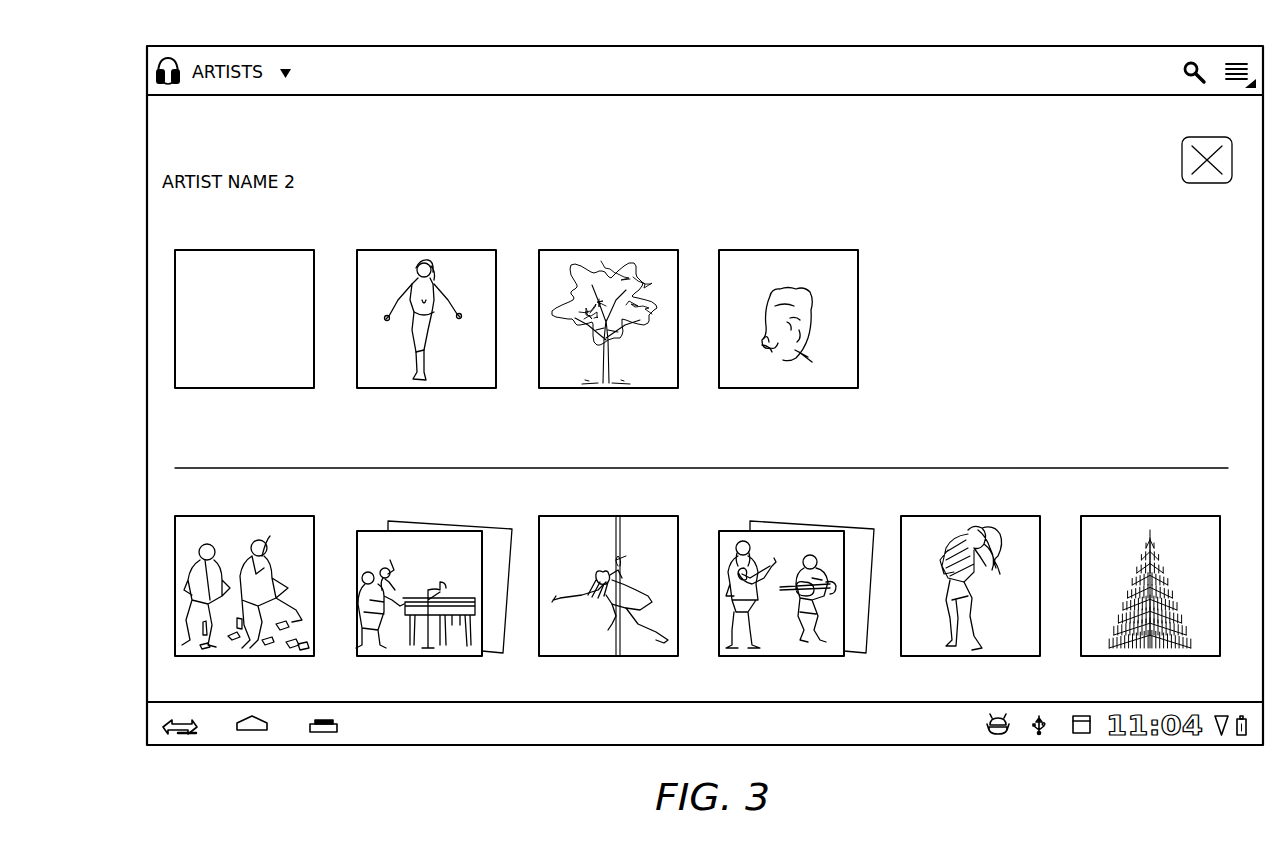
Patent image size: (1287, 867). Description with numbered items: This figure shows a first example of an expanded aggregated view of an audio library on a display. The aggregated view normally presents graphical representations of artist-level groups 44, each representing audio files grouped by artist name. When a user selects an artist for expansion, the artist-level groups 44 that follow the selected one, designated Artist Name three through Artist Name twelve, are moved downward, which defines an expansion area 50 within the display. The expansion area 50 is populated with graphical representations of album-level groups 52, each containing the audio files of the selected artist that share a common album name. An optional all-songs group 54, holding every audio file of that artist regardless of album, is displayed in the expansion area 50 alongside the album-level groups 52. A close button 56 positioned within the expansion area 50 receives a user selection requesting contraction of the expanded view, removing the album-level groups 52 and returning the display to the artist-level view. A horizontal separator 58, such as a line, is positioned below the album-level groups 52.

The artist-level groups 44 is at (297, 516).
The expansion area 50 is at (949, 310).
The album-level groups 52 is at (479, 250).
The all-songs group 54 is at (297, 250).
The close button 56 is at (1212, 137).
The horizontal separator 58 is at (1213, 468).